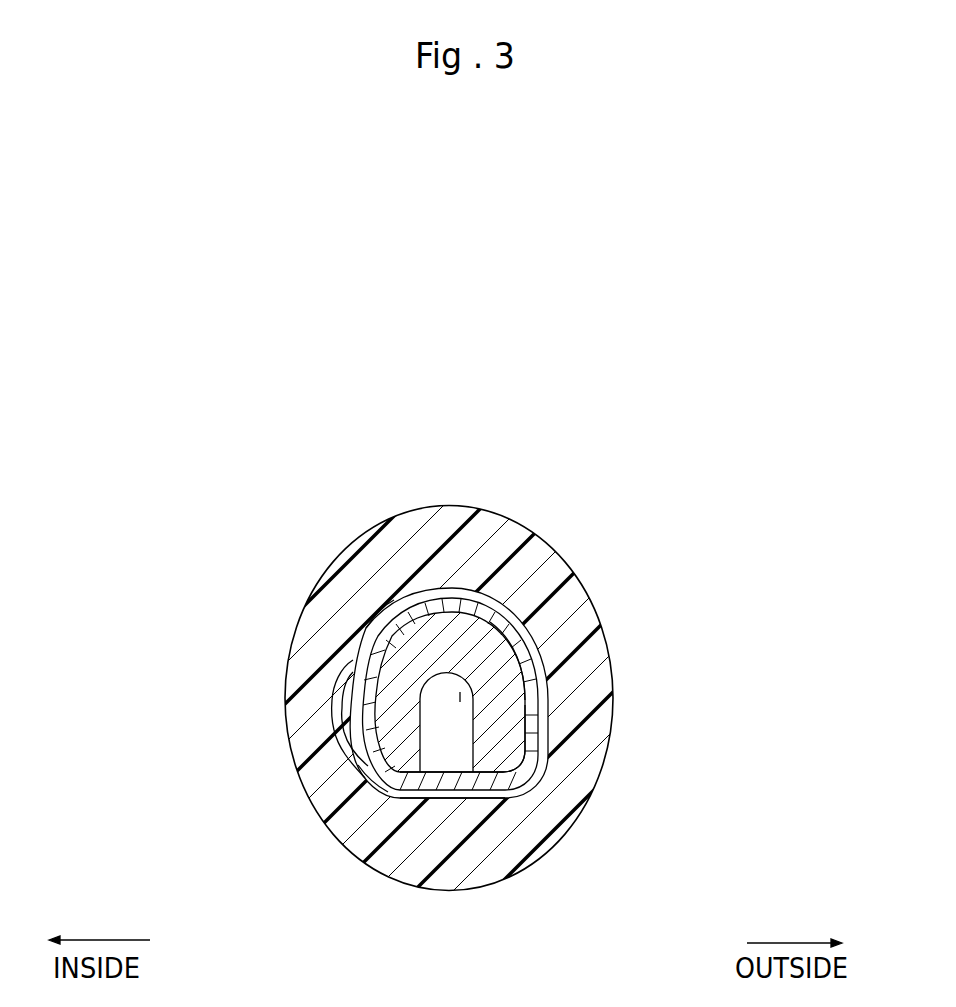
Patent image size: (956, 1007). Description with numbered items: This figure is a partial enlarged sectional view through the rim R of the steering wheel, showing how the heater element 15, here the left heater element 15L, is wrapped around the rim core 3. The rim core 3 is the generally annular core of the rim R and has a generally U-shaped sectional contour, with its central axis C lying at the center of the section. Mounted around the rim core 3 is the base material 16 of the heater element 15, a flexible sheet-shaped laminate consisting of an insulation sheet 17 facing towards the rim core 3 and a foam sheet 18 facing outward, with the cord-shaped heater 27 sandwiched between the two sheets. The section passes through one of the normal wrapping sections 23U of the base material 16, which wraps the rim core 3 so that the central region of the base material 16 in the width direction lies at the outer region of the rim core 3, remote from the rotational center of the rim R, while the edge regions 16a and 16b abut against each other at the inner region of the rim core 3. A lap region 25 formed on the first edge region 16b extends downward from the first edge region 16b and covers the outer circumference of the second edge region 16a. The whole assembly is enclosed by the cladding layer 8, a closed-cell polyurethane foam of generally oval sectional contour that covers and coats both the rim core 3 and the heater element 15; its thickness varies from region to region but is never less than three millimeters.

The rim core 3 is at (456, 606).
The cladding layer 8 is at (600, 617).
The heater element 15 is at (525, 600).
The left heater element 15L is at (482, 888).
The base material 16 is at (672, 665).
The second edge region 16a is at (340, 694).
The first edge region 16b is at (345, 682).
The insulation sheet 17 is at (547, 666).
The foam sheet 18 is at (548, 755).
The normal wrapping section 23U is at (480, 803).
The lap region 25 is at (345, 731).
The cord-shaped heater 27 is at (360, 627).
The central axis C is at (460, 692).
The rim R is at (577, 490).